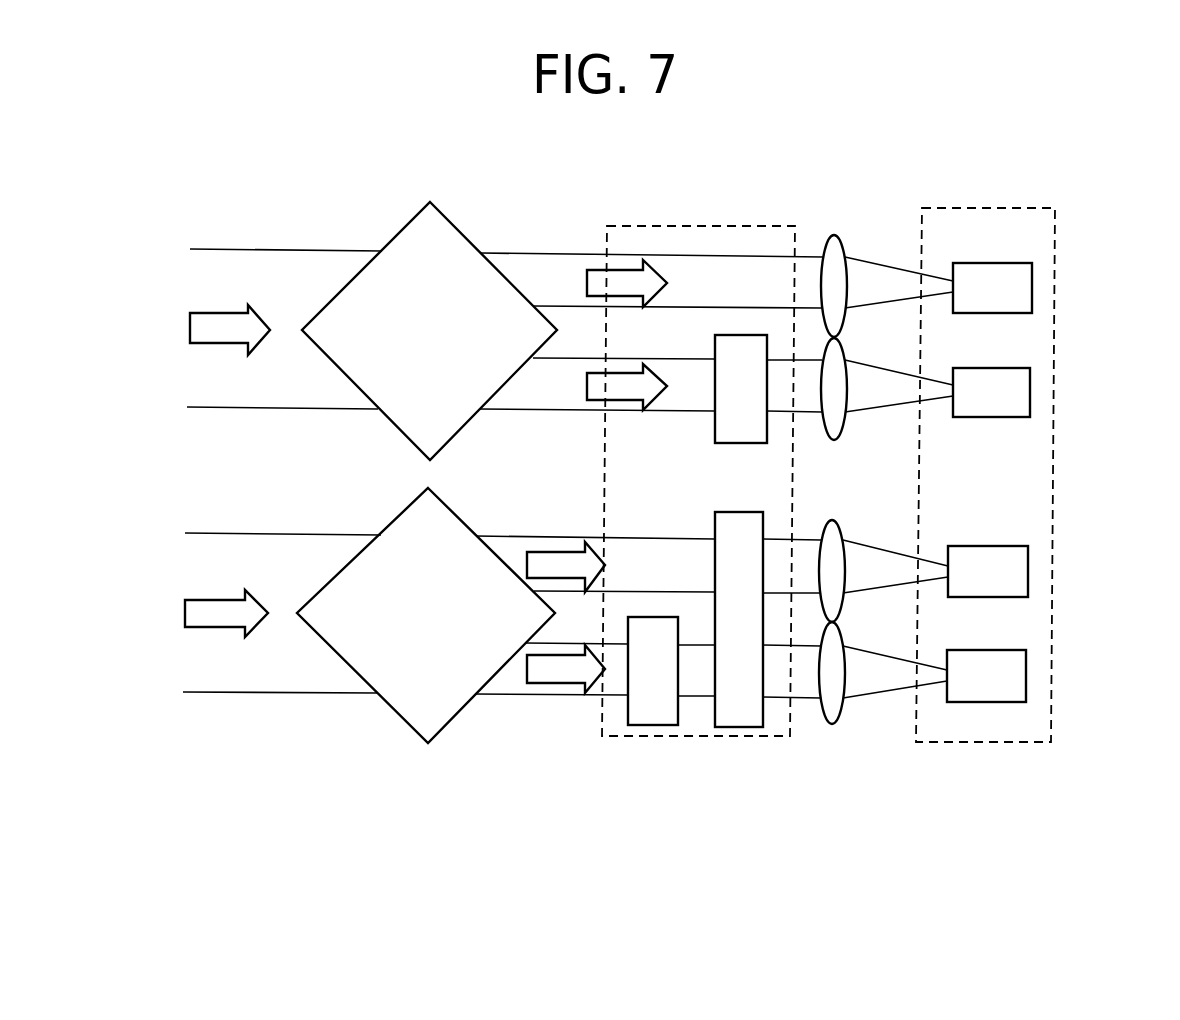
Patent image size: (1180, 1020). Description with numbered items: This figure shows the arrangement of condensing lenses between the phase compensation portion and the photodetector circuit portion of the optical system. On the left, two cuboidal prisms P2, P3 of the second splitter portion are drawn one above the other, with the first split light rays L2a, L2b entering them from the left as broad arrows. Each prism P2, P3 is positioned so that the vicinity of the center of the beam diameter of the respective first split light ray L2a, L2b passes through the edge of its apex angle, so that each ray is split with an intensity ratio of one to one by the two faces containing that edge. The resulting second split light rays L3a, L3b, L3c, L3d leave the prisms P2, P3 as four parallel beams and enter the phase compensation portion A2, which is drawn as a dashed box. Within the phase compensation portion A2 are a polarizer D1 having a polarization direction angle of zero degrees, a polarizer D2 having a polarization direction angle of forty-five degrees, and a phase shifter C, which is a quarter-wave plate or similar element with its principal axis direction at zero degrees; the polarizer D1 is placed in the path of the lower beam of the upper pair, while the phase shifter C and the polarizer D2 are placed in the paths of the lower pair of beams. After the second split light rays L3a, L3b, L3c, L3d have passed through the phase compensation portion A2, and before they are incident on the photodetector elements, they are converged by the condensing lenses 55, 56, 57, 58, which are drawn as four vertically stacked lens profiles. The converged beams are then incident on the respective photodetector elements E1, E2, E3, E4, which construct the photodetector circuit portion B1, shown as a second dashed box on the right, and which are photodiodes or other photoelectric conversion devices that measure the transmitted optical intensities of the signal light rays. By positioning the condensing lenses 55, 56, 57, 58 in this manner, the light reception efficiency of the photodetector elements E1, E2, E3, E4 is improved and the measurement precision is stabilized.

The prism P2 is at (398, 237).
The prism P3 is at (394, 712).
The first split light ray L2a is at (186, 331).
The first split light ray L2b is at (184, 618).
The second split light ray L3a is at (602, 268).
The second split light ray L3b is at (597, 412).
The second split light ray L3c is at (538, 550).
The second split light ray L3d is at (552, 687).
The polarizer D1 is at (745, 335).
The polarizer D2 is at (737, 732).
The phase shifter C is at (650, 730).
The phase compensation portion A2 is at (762, 745).
The photodetector circuit portion B1 is at (973, 748).
The condensing lens 55 is at (838, 235).
The condensing lens 56 is at (832, 442).
The condensing lens 57 is at (832, 520).
The condensing lens 58 is at (830, 727).
The photodetector element E1 is at (1032, 283).
The photodetector element E2 is at (1030, 387).
The photodetector element E3 is at (1028, 571).
The photodetector element E4 is at (1026, 676).